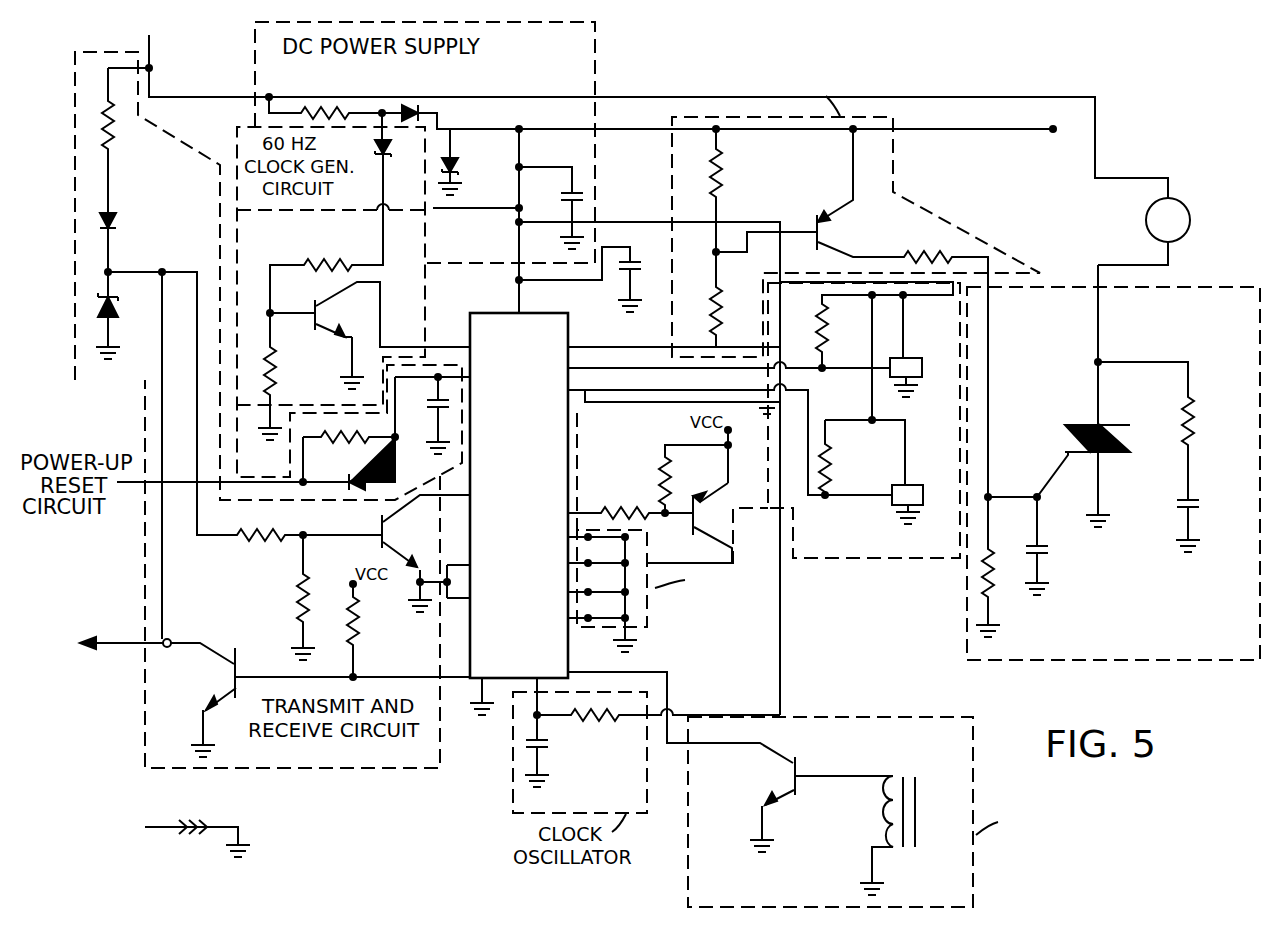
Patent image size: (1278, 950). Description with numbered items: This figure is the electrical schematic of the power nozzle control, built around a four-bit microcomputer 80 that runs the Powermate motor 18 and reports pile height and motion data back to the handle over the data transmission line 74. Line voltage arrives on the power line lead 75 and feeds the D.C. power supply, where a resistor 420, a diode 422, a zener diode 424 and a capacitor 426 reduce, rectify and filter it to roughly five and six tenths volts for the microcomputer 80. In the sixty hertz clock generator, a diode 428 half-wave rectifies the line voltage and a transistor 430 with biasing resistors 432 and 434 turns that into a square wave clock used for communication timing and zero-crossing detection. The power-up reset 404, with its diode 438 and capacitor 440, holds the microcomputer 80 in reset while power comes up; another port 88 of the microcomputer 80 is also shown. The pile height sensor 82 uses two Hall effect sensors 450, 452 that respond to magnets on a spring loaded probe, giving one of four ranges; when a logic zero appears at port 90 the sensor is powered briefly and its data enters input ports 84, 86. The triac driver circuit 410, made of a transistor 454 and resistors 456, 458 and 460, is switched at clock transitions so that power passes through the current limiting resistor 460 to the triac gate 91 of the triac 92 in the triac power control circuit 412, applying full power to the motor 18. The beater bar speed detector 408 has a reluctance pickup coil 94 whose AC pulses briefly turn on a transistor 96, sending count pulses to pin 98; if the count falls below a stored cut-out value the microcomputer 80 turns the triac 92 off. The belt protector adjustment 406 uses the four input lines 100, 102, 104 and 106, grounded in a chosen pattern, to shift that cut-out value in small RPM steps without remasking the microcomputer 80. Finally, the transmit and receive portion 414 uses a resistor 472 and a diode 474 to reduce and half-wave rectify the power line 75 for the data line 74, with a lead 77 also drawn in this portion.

The power line lead 75 is at (150, 50).
The resistor 472 is at (118, 142).
The diode 474 is at (114, 222).
The resistor 420 is at (302, 108).
The diode 422 is at (400, 106).
The zener diode 424 is at (456, 165).
The capacitor 426 is at (567, 185).
The diode 428 is at (389, 147).
The transistor 430 is at (312, 311).
The biasing resistor 432 is at (318, 263).
The biasing resistor 434 is at (277, 359).
The power-up reset 404 is at (291, 442).
The diode 438 is at (357, 443).
The capacitor 440 is at (432, 401).
The four-bit microcomputer 80 is at (570, 331).
The input port 84 is at (568, 354).
The input port 86 is at (568, 381).
The microcomputer pin 88 is at (568, 413).
The port 90 is at (568, 508).
The input line 100 is at (568, 538).
The input line 102 is at (568, 563).
The input line 104 is at (568, 592).
The input line 106 is at (568, 618).
The pin 98 is at (568, 672).
The belt protector adjustment 406 is at (578, 637).
The data transmission line 74 is at (128, 640).
The transmit and receive portion 414 is at (144, 706).
The ground line 77 is at (165, 827).
The resistor 456 is at (722, 192).
The transistor 454 is at (826, 218).
The resistor 458 is at (720, 298).
The current limiting resistor 460 is at (921, 256).
The triac driver circuit 410 is at (912, 198).
The Powermate motor 18 is at (1190, 211).
The triac power control circuit 412 is at (1186, 285).
The Hall effect sensor 450 is at (926, 347).
The Hall effect sensor 452 is at (917, 485).
The pile height sensor 82 is at (857, 558).
The triac 92 is at (1100, 426).
The triac gate 91 is at (1070, 462).
The transistor 96 is at (779, 760).
The reluctance pickup coil 94 is at (893, 776).
The beater bar speed detector 408 is at (985, 722).